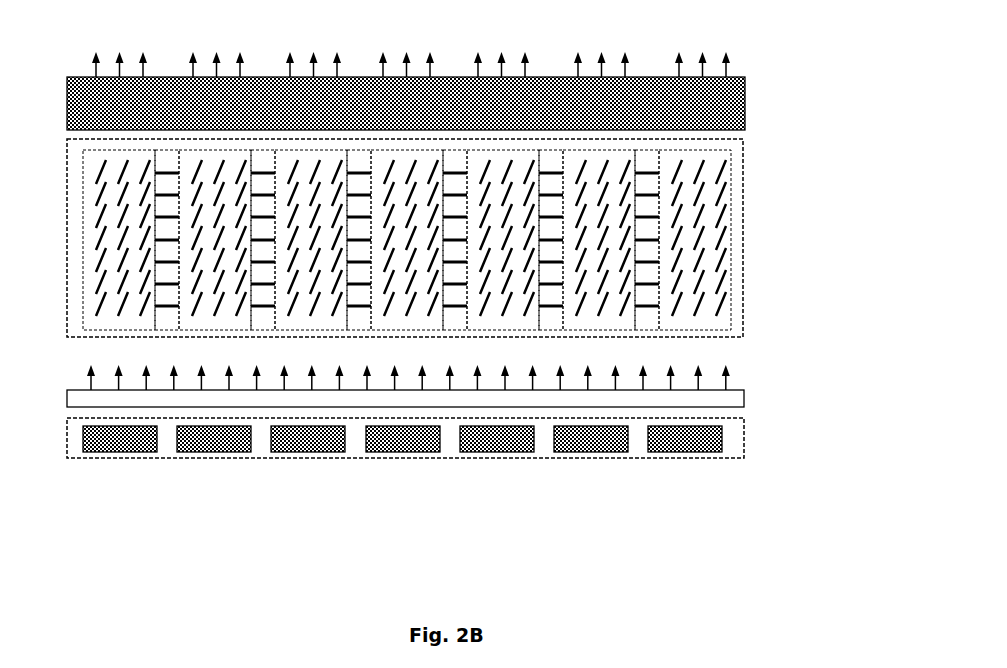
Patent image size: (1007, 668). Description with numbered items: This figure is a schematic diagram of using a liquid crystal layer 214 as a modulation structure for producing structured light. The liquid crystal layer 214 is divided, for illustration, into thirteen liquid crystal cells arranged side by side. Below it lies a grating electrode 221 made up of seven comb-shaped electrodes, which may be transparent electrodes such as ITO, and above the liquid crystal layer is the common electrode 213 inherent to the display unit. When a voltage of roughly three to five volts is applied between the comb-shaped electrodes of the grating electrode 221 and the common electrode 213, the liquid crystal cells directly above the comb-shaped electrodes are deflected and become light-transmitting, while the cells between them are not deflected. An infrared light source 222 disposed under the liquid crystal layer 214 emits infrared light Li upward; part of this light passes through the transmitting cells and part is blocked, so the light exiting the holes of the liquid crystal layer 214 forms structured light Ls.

The common electrode 213 is at (745, 93).
The liquid crystal layer 214 is at (444, 253).
The infrared light source 222 is at (744, 392).
The grating electrode 221 is at (455, 480).
The structured light Ls is at (704, 51).
The infrared light Li is at (690, 373).